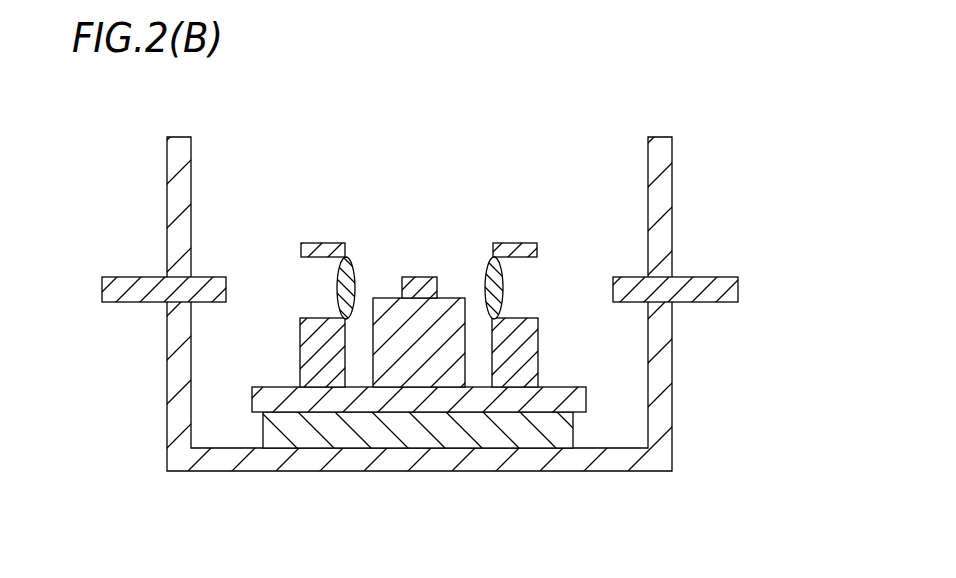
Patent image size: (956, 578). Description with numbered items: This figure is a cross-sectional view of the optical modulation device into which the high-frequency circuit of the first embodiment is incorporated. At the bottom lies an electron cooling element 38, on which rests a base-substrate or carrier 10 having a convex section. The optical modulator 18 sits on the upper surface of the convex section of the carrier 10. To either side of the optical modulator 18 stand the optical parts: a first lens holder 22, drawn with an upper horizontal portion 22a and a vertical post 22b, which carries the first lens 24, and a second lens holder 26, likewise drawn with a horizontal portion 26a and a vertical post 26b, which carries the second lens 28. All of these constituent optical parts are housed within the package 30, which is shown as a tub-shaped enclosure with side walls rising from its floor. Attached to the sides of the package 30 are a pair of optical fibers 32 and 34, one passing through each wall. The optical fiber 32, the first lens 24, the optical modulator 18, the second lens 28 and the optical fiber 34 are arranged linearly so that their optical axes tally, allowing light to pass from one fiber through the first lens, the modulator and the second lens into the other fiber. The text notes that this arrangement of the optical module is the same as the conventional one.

The base-substrate 10 is at (367, 400).
The optical modulator 18 is at (423, 282).
The first lens holder 22 is at (355, 147).
The first lead horizontal portion 22a is at (325, 250).
The first lead vertical portion 22b is at (303, 317).
The first lens 24 is at (352, 279).
The second lens holder 26 is at (615, 147).
The second lead horizontal portion 26a is at (513, 250).
The second lead vertical portion 26b is at (530, 317).
The second lens 28 is at (490, 279).
The package 30 is at (658, 397).
The optical fiber 32 is at (122, 286).
The optical fiber 34 is at (708, 288).
The electron cooling element 38 is at (468, 442).